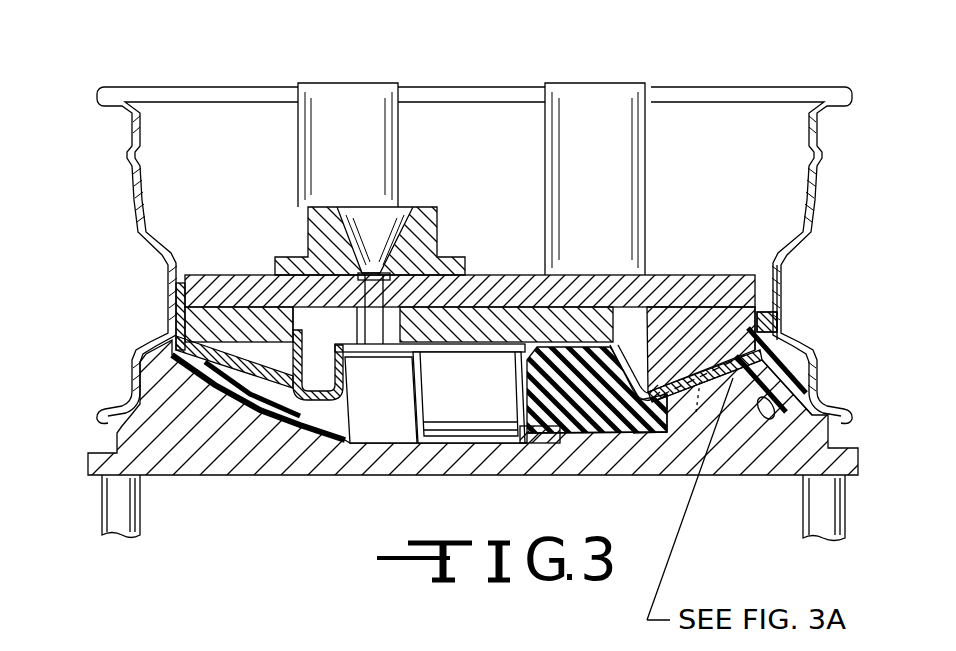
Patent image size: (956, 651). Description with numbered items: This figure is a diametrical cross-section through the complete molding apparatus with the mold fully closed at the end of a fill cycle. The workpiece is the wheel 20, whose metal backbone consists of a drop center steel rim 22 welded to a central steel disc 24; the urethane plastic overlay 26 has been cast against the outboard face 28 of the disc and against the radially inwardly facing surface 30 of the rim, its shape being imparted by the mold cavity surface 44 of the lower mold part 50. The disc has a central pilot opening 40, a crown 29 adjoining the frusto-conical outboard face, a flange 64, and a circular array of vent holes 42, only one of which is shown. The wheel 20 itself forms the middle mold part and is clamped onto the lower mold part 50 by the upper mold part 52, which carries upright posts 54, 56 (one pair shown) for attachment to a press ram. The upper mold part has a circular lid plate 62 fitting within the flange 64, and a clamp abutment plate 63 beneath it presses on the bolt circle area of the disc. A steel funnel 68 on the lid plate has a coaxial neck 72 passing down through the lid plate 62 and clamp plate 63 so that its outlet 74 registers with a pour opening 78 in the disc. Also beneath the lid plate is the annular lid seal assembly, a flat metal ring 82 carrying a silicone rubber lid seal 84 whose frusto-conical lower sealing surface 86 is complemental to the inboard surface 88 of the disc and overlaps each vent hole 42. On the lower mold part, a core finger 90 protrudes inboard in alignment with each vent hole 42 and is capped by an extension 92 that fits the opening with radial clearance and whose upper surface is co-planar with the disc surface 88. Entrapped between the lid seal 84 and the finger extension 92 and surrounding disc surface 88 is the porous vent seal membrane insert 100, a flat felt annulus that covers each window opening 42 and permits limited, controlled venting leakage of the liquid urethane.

The wheel 20 is at (86, 90).
The drop center steel rim 22 is at (124, 190).
The central steel disc 24 is at (180, 280).
The plastic overlay 26 is at (600, 452).
The outboard face 28 is at (572, 345).
The crown 29 is at (645, 434).
The radially inwardly facing surface 30 is at (812, 384).
The pilot opening 40 is at (500, 348).
The vent holes 42 is at (686, 308).
The mold cavity surface 44 is at (565, 450).
The lower mold part 50 is at (80, 462).
The upper mold part 52 is at (598, 76).
The upright post 54 is at (398, 172).
The upright post 56 is at (612, 138).
The lid plate 62 is at (663, 275).
The clamp abutment plate 63 is at (503, 350).
The flange 64 is at (758, 300).
The funnel 68 is at (436, 226).
The neck 72 is at (398, 327).
The outlet 74 is at (350, 432).
The pour opening 78 is at (375, 352).
The flat metal ring 82 is at (176, 292).
The lid seal 84 is at (172, 345).
The lower sealing surface 86 is at (222, 412).
The inboard surface 88 is at (305, 372).
The core finger 90 is at (780, 433).
The extension 92 is at (703, 401).
The vent seal membrane insert 100 is at (225, 397).